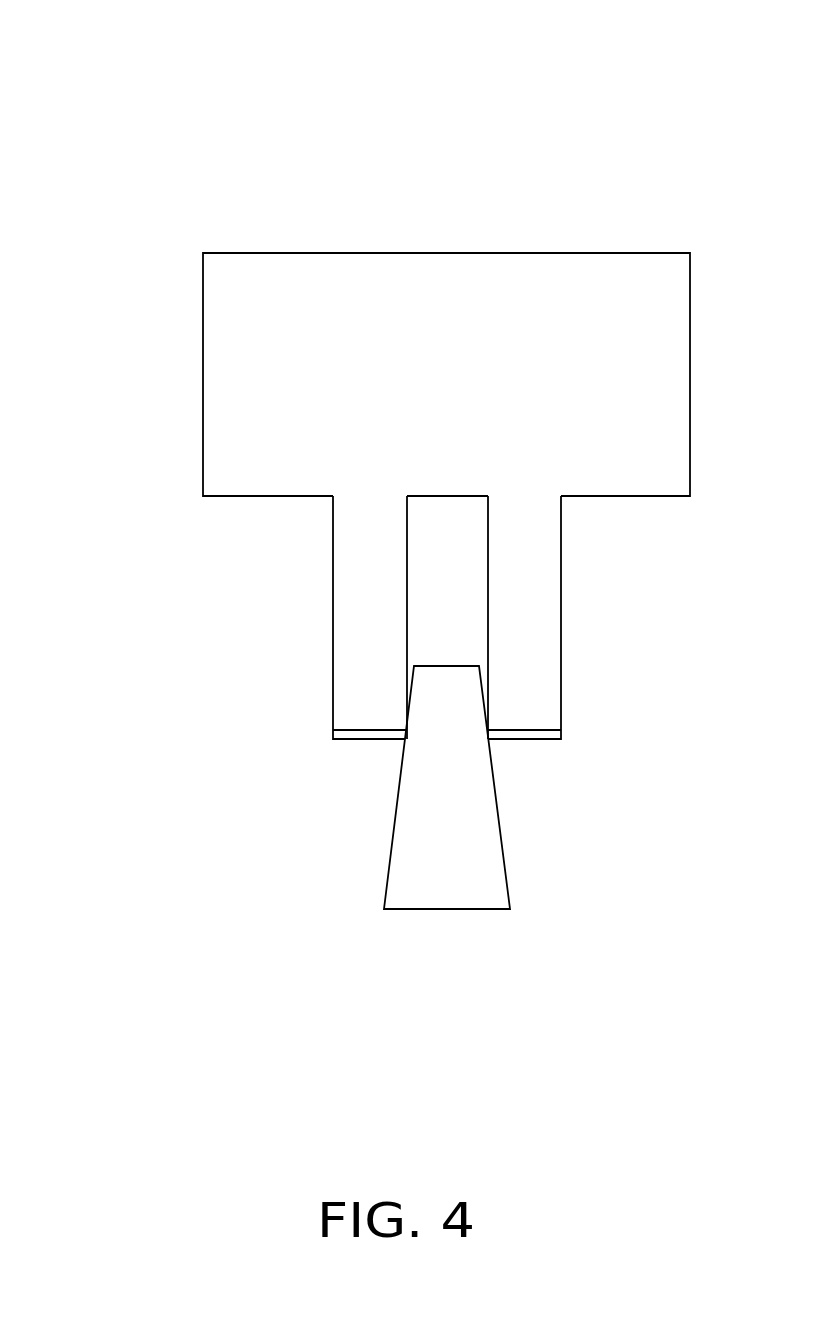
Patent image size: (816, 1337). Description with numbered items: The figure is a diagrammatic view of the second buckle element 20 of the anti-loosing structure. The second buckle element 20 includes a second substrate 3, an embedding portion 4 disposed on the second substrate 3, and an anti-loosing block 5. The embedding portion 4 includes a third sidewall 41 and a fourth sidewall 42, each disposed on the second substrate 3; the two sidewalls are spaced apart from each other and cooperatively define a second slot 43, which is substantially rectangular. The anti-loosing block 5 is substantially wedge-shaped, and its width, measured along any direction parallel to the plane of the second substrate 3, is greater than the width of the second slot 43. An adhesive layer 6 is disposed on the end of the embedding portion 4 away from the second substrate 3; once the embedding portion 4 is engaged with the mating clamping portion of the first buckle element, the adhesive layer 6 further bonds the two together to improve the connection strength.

The second buckle element 20 is at (441, 34).
The second substrate 3 is at (326, 383).
The embedding portion 4 is at (532, 617).
The third sidewall 41 is at (369, 647).
The fourth sidewall 42 is at (517, 538).
The second slot 43 is at (437, 592).
The anti-loosing block 5 is at (424, 842).
The adhesive layer 6 is at (529, 734).